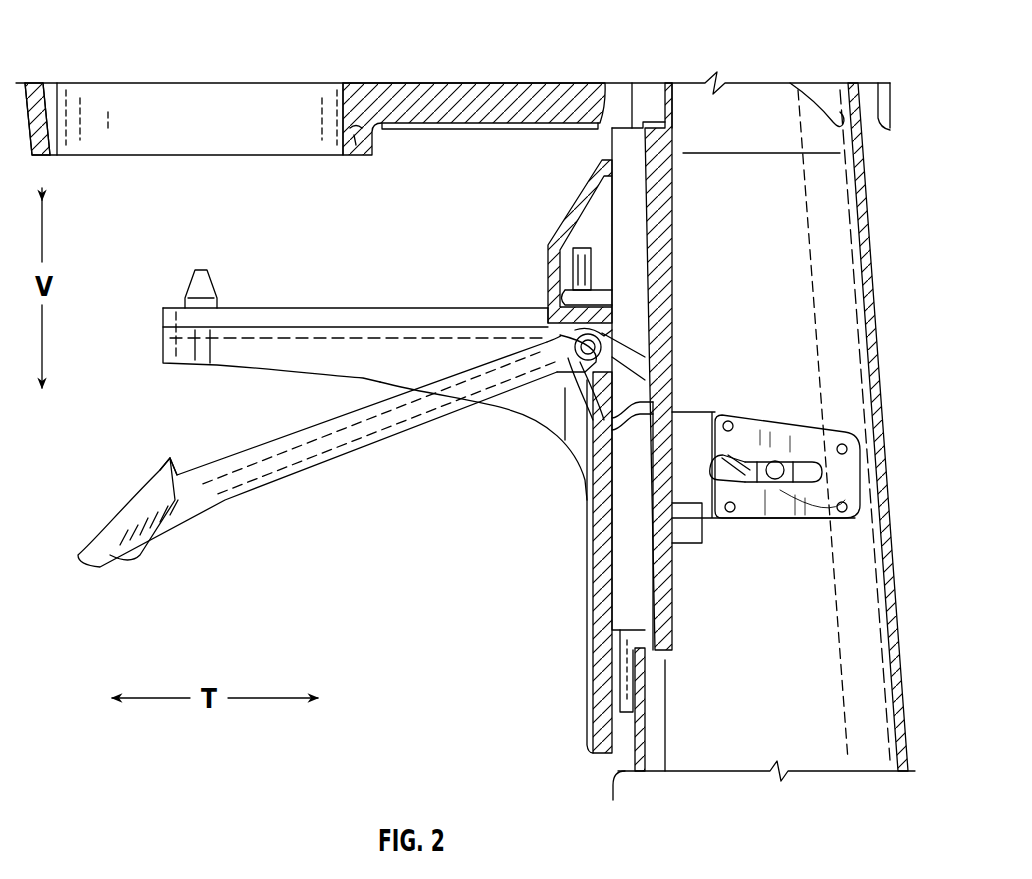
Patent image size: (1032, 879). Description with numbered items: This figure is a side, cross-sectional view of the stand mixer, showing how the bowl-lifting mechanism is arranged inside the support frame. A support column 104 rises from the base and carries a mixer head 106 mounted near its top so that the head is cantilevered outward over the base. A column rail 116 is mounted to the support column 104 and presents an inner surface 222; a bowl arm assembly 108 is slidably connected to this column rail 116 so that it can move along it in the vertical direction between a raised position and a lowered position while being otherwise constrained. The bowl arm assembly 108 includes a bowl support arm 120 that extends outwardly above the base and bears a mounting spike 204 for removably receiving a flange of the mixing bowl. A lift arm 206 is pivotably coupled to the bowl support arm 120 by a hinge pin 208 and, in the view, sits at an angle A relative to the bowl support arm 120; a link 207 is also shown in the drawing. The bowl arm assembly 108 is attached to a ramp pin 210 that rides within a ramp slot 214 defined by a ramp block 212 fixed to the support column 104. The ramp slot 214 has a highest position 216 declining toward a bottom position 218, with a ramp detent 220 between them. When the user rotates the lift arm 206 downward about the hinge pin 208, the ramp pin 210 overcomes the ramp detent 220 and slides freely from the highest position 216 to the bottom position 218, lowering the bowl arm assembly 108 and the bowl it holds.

The support column 104 is at (744, 183).
The mixer head 106 is at (437, 95).
The bowl arm assembly 108 is at (583, 600).
The column rail 116 is at (630, 780).
The bowl support arm 120 is at (294, 313).
The mounting spike 204 is at (197, 287).
The lift arm 206 is at (207, 470).
The link 207 is at (183, 530).
The hinge pin 208 is at (560, 340).
The ramp pin 210 is at (776, 482).
The ramp block 212 is at (815, 420).
The ramp slot 214 is at (770, 450).
The highest position 216 is at (742, 446).
The bottom position 218 is at (800, 482).
The ramp detent 220 is at (727, 488).
The inner surface 222 is at (680, 623).
The angle A is at (470, 368).